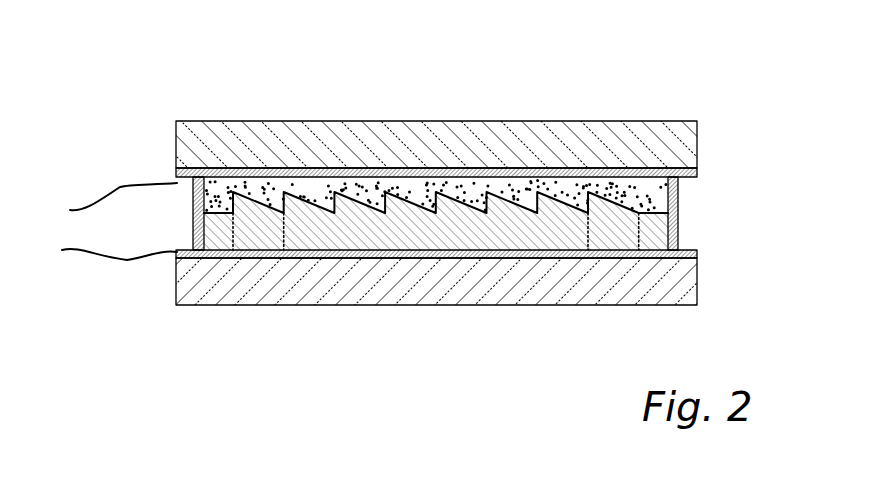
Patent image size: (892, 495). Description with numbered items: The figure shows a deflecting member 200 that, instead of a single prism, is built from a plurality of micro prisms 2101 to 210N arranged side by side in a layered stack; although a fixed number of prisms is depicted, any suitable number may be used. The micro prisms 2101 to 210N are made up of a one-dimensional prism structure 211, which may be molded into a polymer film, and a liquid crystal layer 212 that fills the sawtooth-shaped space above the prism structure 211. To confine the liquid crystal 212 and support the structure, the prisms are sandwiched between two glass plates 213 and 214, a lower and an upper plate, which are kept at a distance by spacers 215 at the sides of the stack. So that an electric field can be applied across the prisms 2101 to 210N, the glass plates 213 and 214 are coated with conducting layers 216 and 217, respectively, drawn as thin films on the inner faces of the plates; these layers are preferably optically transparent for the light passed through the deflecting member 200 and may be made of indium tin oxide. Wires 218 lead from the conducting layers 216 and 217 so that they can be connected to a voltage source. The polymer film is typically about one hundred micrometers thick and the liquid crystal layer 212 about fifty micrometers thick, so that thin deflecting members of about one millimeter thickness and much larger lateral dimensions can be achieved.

The deflecting member 200 is at (472, 66).
The glass plate 214 is at (183, 140).
The glass plate 213 is at (207, 295).
The conducting layer 217 is at (695, 175).
The conducting layer 216 is at (697, 252).
The spacers 215 is at (192, 213).
The liquid crystal layer 212 is at (652, 185).
The one-dimensional prism structure 211 is at (655, 240).
The micro prism 2101 is at (260, 232).
The micro prism 210N is at (617, 228).
The wires 218 is at (120, 187).